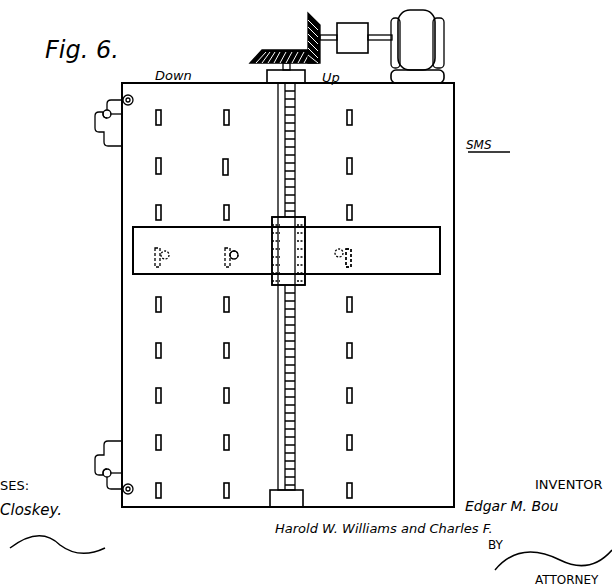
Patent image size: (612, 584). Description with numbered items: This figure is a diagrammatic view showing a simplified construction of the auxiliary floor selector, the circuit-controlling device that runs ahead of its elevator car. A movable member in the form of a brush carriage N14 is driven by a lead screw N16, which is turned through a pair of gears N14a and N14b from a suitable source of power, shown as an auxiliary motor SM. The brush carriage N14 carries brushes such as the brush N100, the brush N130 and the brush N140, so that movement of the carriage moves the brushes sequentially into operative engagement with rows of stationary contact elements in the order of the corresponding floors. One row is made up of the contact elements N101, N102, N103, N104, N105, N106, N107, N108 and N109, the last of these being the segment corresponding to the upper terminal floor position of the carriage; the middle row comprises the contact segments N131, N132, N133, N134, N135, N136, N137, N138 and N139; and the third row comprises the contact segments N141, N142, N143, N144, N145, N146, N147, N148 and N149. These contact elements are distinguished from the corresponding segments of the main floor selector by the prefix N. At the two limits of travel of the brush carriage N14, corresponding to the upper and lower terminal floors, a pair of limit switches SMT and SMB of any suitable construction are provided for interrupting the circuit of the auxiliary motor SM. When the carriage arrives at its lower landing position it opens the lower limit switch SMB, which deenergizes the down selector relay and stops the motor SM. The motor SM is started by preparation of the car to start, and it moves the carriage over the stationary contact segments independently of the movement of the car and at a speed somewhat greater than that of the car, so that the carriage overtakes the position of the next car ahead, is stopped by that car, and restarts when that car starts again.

The brush carriage N14 is at (266, 283).
The gear N14a is at (308, 35).
The gear N14b is at (262, 54).
The lead screw N16 is at (278, 136).
The brush N100 is at (286, 250).
The contact element N101 is at (161, 490).
The contact element N102 is at (161, 442).
The contact element N103 is at (161, 395).
The contact element N104 is at (161, 350).
The contact element N105 is at (161, 304).
The contact element N106 is at (159, 250).
The contact element N107 is at (161, 212).
The contact element N108 is at (161, 165).
The auxiliary floor selector segment N109 is at (166, 107).
The brush N130 is at (237, 258).
The contact segment N131 is at (240, 484).
The contact segment N132 is at (229, 442).
The contact segment N133 is at (229, 395).
The contact segment N134 is at (229, 350).
The contact segment N135 is at (227, 312).
The contact segment N136 is at (232, 250).
The contact segment N137 is at (229, 212).
The stationary contact segment N138 is at (228, 167).
The contact segment N139 is at (234, 107).
The brush N140 is at (338, 250).
The contact segment N141 is at (352, 490).
The contact segment N142 is at (352, 442).
The contact segment N143 is at (352, 395).
The contact segment N144 is at (352, 350).
The contact segment N145 is at (352, 304).
The contact segment N146 is at (351, 263).
The contact segment N147 is at (352, 212).
The contact segment N148 is at (352, 166).
The contact segment N149 is at (352, 113).
The auxiliary motor SM is at (425, 10).
The upper limit switch SMT is at (121, 100).
The lower limit switch SMB is at (97, 452).